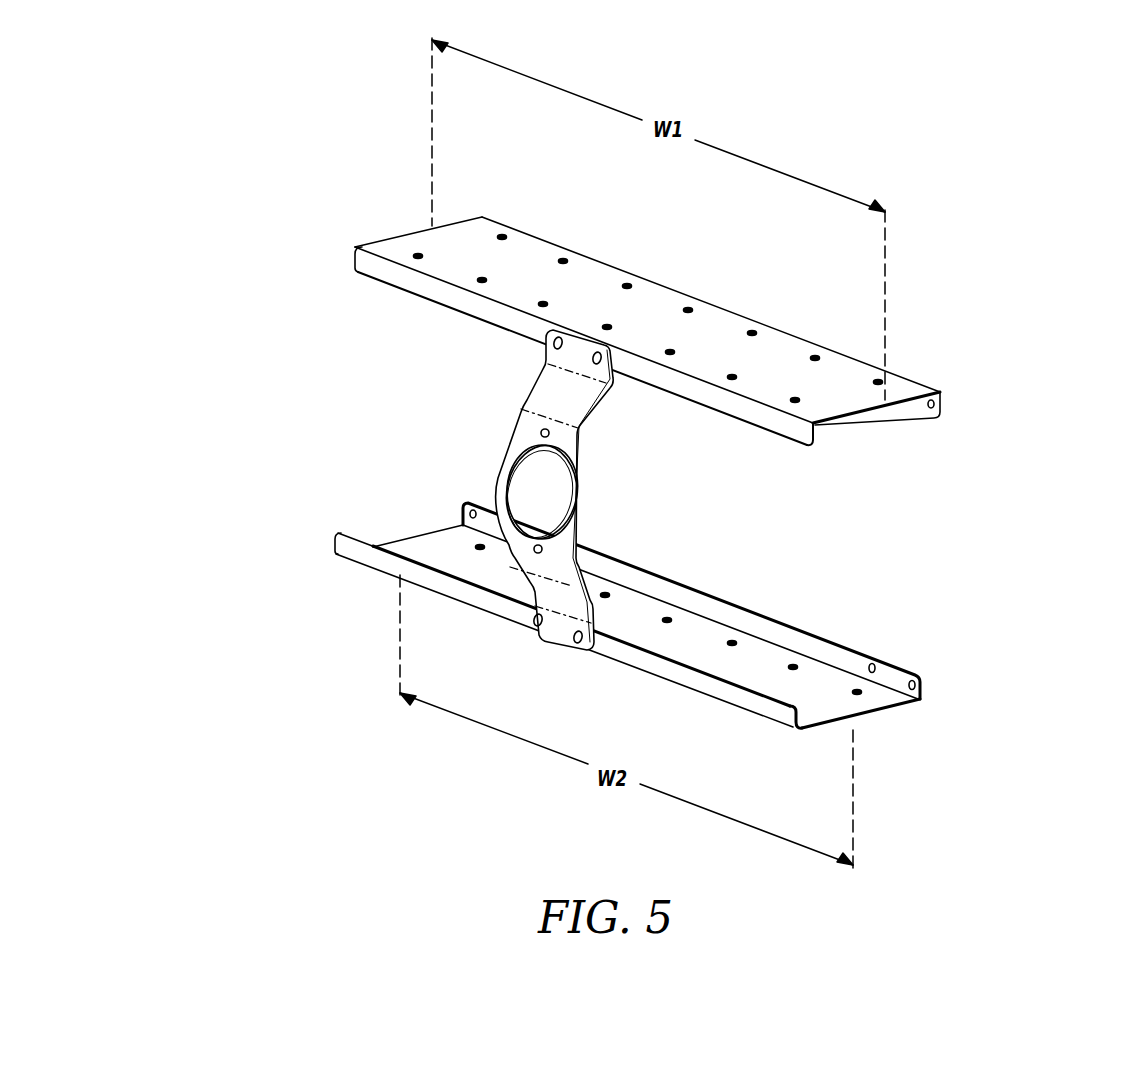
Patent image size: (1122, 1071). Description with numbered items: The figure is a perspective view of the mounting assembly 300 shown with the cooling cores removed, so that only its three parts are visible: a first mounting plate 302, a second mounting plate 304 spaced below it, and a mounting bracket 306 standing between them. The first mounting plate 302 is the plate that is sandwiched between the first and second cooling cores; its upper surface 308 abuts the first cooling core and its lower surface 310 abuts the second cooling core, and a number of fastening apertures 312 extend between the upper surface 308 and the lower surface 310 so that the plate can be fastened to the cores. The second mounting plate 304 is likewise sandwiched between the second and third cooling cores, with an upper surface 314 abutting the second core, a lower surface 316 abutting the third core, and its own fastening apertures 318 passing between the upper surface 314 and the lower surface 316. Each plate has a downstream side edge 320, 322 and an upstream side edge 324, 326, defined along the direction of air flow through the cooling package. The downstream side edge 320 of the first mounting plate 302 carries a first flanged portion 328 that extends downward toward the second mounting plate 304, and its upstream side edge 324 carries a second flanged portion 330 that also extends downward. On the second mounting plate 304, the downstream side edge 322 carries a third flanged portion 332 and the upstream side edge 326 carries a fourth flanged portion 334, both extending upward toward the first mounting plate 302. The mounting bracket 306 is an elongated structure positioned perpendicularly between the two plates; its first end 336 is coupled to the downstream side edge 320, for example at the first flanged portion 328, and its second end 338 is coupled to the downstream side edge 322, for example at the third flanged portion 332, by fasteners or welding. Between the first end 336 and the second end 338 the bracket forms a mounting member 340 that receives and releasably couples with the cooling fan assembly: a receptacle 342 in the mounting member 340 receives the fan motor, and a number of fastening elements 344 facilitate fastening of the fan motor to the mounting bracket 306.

The mounting assembly 300 is at (1002, 226).
The first mounting plate 302 is at (649, 337).
The second mounting plate 304 is at (621, 611).
The mounting bracket 306 is at (522, 432).
The upper surface 308 is at (787, 358).
The lower surface 310 is at (862, 419).
The fastening apertures 312 is at (690, 307).
The upper surface 314 is at (821, 682).
The lower surface 316 is at (892, 713).
The fastening apertures 318 is at (794, 664).
The downstream side edge 320 is at (391, 268).
The downstream side edge 322 is at (370, 550).
The upstream side edge 324 is at (723, 311).
The upstream side edge 326 is at (698, 590).
The first flanged portion 328 is at (803, 452).
The second flanged portion 330 is at (947, 404).
The third flanged portion 332 is at (777, 706).
The fourth flanged portion 334 is at (897, 683).
The first end 336 is at (572, 338).
The second end 338 is at (558, 625).
The mounting member 340 is at (576, 470).
The receptacle 342 is at (545, 508).
The fastening elements 344 is at (533, 547).